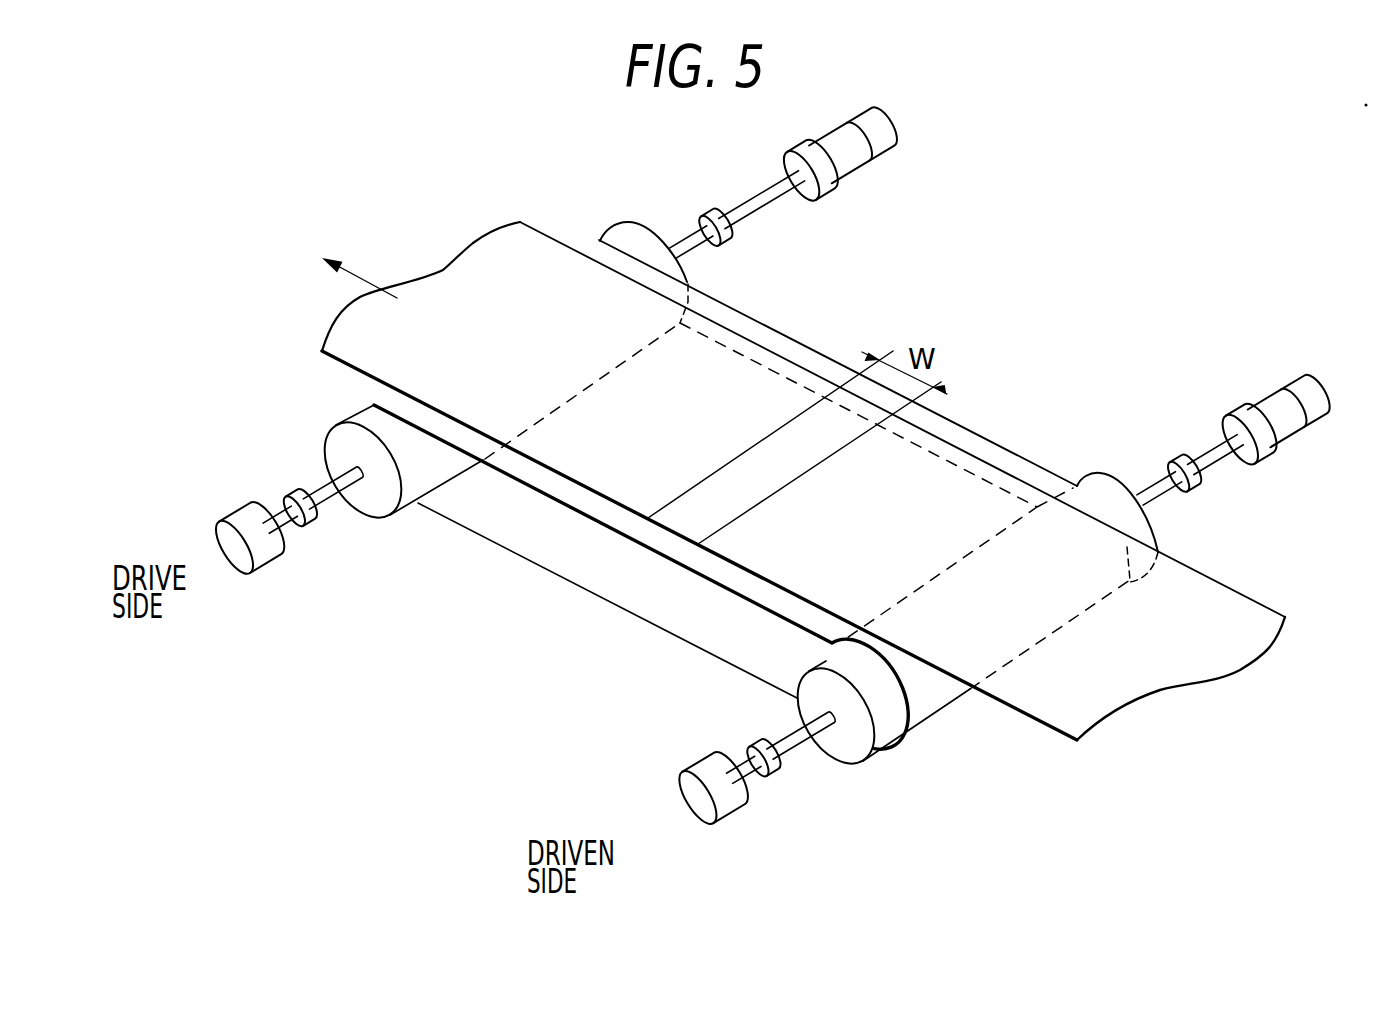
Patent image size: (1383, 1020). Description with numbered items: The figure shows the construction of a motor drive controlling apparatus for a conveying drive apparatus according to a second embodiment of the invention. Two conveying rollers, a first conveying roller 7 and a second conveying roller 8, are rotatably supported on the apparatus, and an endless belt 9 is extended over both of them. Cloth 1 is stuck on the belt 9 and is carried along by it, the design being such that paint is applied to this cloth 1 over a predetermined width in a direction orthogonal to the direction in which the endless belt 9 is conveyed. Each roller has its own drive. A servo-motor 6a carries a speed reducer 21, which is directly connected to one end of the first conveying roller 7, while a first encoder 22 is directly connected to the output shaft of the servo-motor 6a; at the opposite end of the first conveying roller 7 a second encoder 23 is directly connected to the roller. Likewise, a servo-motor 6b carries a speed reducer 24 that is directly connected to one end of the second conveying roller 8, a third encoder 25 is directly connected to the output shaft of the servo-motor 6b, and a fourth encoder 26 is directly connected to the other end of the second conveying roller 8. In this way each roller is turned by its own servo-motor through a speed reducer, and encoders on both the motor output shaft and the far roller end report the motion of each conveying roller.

The cloth 1 is at (443, 278).
The first conveying roller 7 is at (338, 440).
The second conveying roller 8 is at (842, 747).
The endless belt 9 is at (600, 243).
The speed reducer 21 is at (822, 187).
The servo-motor 6a is at (857, 152).
The first encoder 22 is at (888, 148).
The second encoder 23 is at (273, 560).
The speed reducer 24 is at (1263, 448).
The servo-motor 6b is at (1293, 418).
The third encoder 25 is at (1318, 402).
The fourth encoder 26 is at (695, 817).